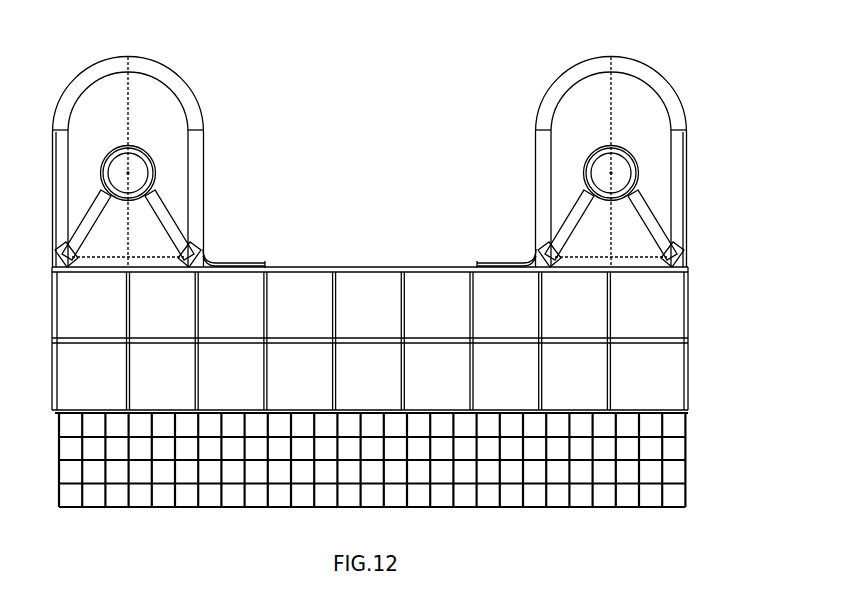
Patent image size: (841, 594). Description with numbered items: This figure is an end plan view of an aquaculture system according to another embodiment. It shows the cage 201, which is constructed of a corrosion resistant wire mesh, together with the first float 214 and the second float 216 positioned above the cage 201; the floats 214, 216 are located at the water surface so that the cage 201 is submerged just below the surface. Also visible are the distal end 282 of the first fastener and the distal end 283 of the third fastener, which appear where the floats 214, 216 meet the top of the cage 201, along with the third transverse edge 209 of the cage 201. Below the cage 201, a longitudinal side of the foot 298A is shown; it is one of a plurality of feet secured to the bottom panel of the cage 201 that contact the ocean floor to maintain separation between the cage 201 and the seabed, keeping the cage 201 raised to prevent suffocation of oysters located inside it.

The second float 216 is at (158, 75).
The first float 214 is at (625, 58).
The distal end of the third fastener 283 is at (225, 258).
The distal end of the first fastener 282 is at (495, 253).
The cage 201 is at (694, 307).
The third transverse edge 209 is at (648, 412).
The foot 298A is at (495, 476).